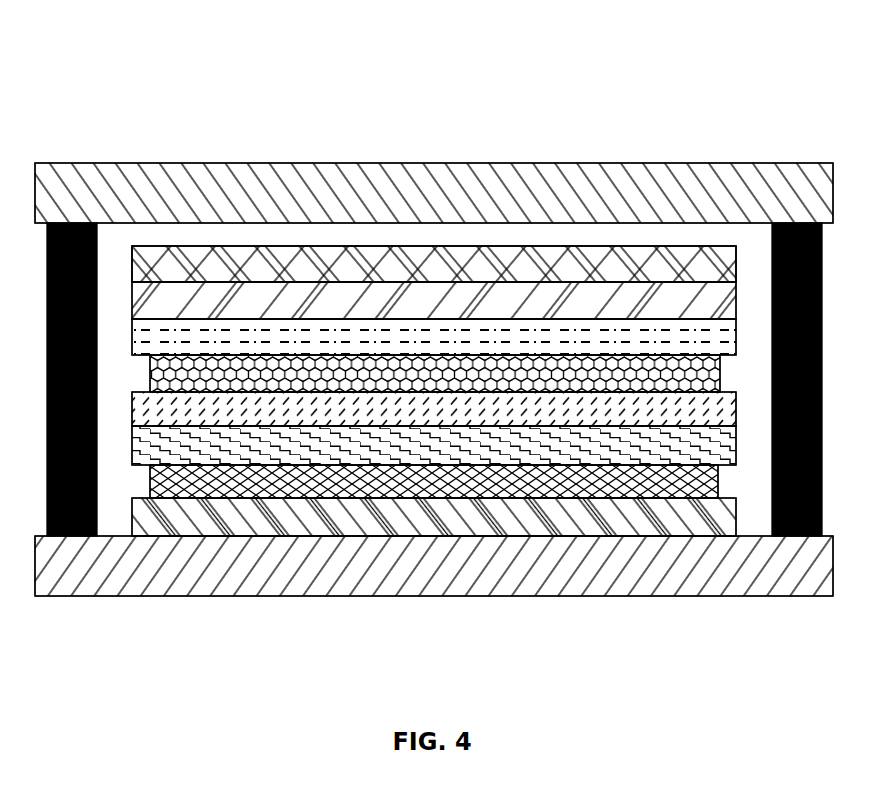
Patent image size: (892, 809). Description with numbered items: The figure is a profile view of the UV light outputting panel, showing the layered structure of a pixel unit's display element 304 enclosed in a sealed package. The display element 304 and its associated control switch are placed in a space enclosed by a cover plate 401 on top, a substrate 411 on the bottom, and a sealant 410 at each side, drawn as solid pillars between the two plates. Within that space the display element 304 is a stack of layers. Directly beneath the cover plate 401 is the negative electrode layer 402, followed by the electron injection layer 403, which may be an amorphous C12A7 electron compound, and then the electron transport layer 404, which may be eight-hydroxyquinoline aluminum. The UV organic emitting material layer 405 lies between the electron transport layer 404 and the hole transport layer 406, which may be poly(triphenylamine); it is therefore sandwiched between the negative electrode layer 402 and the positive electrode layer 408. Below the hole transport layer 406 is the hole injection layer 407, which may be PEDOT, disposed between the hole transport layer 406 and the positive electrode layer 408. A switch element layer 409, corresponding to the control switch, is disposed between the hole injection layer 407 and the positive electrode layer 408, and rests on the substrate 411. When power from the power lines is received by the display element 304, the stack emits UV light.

The display element 304 is at (200, 72).
The cover plate 401 is at (75, 163).
The negative electrode layer 402 is at (194, 247).
The electron injection layer 403 is at (275, 282).
The electron transport layer 404 is at (345, 319).
The UV organic emitting material layer 405 is at (432, 352).
The hole transport layer 406 is at (515, 392).
The hole injection layer 407 is at (589, 428).
The positive electrode layer 408 is at (661, 500).
The switch element layer 409 is at (553, 500).
The sealant 410 is at (73, 540).
The substrate 411 is at (232, 597).